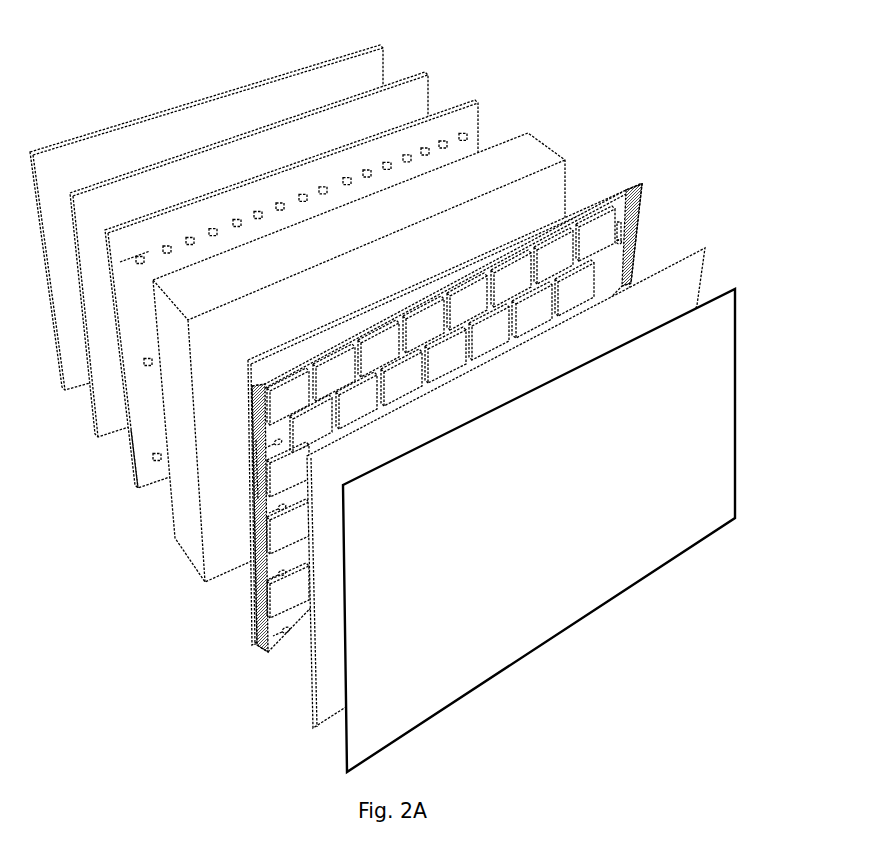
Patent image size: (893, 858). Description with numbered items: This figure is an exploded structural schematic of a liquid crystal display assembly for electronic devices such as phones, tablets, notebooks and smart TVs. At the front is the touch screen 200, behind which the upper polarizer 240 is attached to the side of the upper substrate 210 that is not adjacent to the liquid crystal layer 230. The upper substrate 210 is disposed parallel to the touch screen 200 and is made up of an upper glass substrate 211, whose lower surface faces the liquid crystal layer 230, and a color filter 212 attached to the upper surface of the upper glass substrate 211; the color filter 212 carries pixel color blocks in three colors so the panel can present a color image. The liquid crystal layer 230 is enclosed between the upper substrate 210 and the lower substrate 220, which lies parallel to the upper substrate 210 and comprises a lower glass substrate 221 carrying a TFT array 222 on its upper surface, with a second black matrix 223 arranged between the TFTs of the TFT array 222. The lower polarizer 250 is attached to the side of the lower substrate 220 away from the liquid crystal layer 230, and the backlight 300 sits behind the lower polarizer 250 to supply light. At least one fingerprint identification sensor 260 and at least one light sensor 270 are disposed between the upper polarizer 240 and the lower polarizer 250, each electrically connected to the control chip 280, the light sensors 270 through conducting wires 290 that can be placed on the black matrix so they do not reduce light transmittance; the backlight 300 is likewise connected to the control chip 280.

The touch screen 200 is at (711, 313).
The upper polarizer 240 is at (690, 283).
The upper substrate 210 is at (449, 441).
The upper glass substrate 211 is at (252, 601).
The color filter 212 is at (274, 522).
The fingerprint identification sensor 260 is at (285, 637).
The light sensor 270 is at (271, 443).
The conducting wires 290 is at (256, 483).
The control chip 280 is at (631, 202).
The liquid crystal layer 230 is at (551, 181).
The lower substrate 220 is at (297, 297).
The lower glass substrate 221 is at (128, 463).
The TFT array 222 is at (139, 250).
The second black matrix 223 is at (150, 272).
The lower polarizer 250 is at (411, 90).
The backlight 300 is at (370, 62).